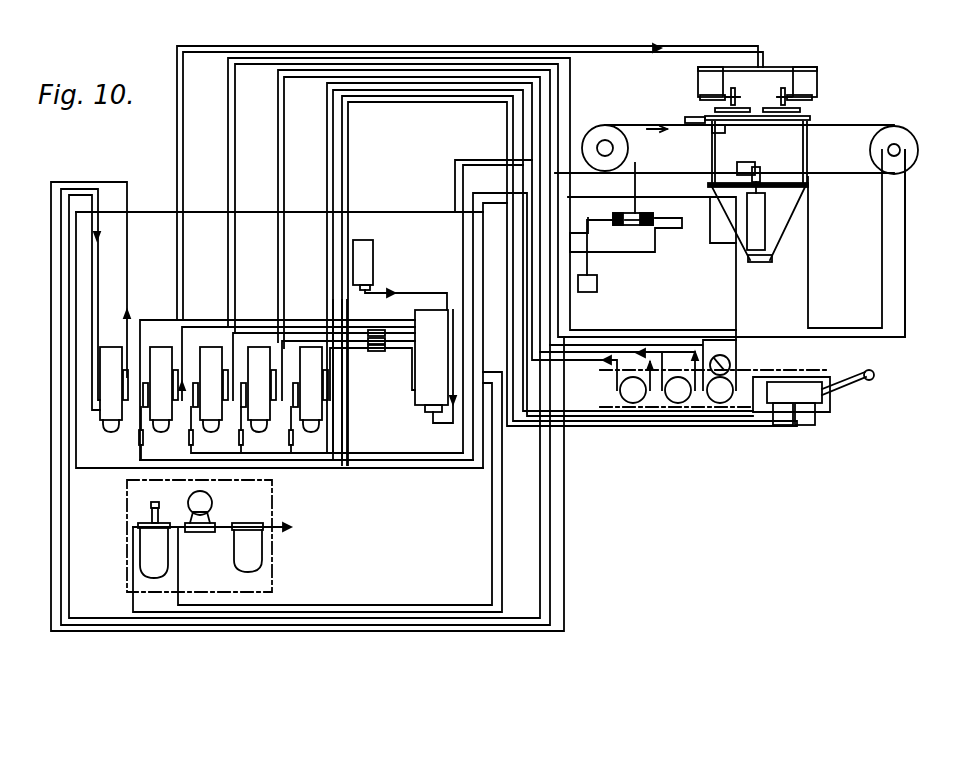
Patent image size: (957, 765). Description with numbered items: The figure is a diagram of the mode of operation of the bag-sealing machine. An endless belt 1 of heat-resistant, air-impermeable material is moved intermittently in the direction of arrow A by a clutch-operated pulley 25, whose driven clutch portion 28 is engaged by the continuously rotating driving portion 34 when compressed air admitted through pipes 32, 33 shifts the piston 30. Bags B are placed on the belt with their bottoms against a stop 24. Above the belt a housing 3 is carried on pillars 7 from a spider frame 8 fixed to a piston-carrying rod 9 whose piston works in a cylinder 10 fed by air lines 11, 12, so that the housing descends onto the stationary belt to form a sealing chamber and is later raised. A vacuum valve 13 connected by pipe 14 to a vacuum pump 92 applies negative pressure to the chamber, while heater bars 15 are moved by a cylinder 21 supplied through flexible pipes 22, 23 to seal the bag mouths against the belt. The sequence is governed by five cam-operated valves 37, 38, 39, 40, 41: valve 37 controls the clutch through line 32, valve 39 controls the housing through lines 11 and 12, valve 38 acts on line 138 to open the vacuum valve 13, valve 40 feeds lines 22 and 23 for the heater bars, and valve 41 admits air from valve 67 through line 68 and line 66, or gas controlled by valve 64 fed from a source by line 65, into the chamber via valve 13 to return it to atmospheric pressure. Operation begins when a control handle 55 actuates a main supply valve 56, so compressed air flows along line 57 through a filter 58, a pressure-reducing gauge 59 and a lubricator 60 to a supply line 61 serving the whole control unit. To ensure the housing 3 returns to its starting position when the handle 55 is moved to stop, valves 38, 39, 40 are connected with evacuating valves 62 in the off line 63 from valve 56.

The belt 1 is at (615, 127).
The housing 3 is at (808, 118).
The pillars 7 is at (715, 145).
The spider frame 8 is at (760, 188).
The piston-carrying rod 9 is at (763, 195).
The cylinder 10 is at (766, 258).
The air line 11 is at (235, 172).
The air line 12 is at (224, 372).
The vacuum valve 13 is at (635, 228).
The pipe 14 is at (617, 214).
The heater bars 15 is at (747, 108).
The cylinder 21 is at (715, 95).
The flexible pipe 22 is at (177, 153).
The flexible pipe 23 is at (182, 173).
The stop 24 is at (693, 117).
The pulley 25 is at (913, 141).
The driven portion of friction clutch 28 is at (905, 141).
The piston 30 is at (905, 141).
The driving portion of clutch 34 is at (905, 140).
The pipe 32 is at (346, 402).
The pipe 33 is at (905, 293).
The cam-operated valve 37 is at (318, 357).
The cam-operated valve 38 is at (265, 357).
The cam-operated valve 39 is at (212, 357).
The cam-operated valve 40 is at (162, 358).
The cam-operated valve 41 is at (103, 410).
The control handle 55 is at (875, 374).
The main supply valve 56 is at (813, 387).
The line 57 is at (283, 530).
The filter 58 is at (257, 525).
The pressure-reducing gauge 59 is at (205, 523).
The lubricator 60 is at (140, 525).
The supply line 61 is at (386, 212).
The evacuating valves 62 is at (435, 322).
The off line 63 is at (460, 285).
The valve 64 is at (632, 402).
The line 65 is at (653, 395).
The line 66 is at (128, 262).
The valve 67 is at (687, 401).
The line 68 is at (662, 360).
The vacuum pump 92 is at (598, 290).
The line 138 is at (290, 240).
The arrow A is at (652, 139).
The bags B is at (650, 120).